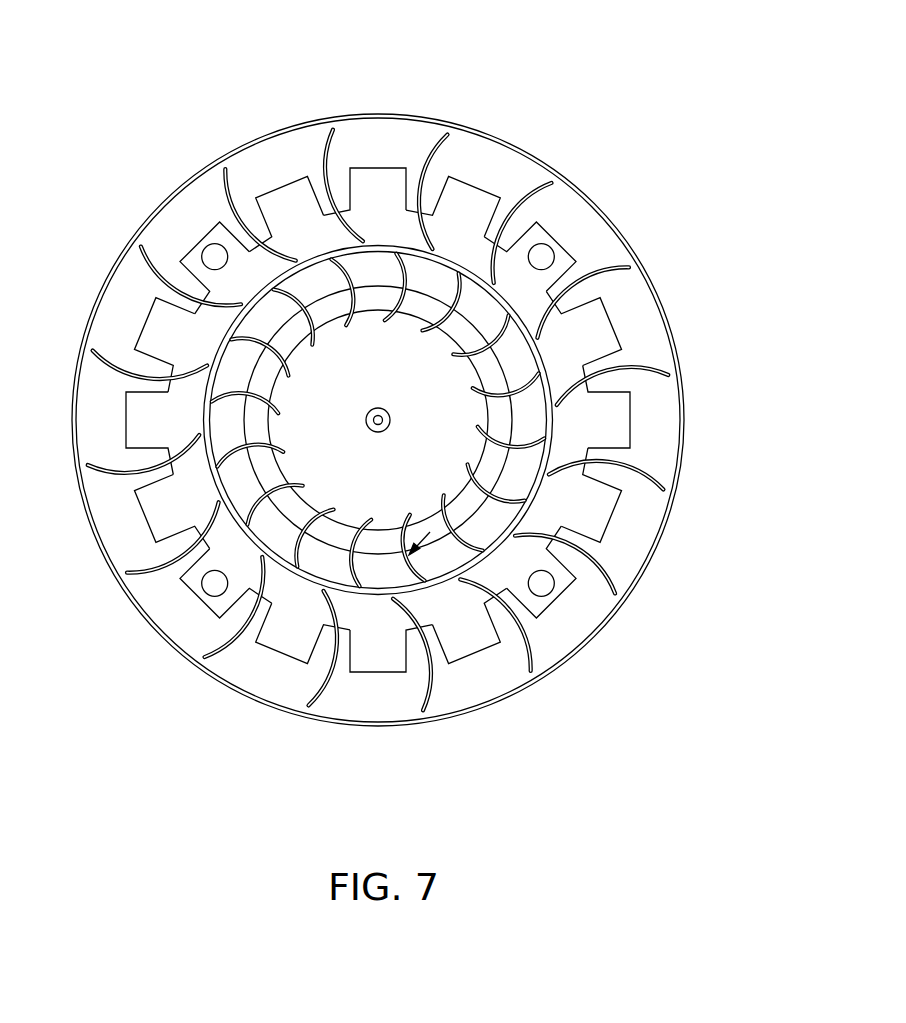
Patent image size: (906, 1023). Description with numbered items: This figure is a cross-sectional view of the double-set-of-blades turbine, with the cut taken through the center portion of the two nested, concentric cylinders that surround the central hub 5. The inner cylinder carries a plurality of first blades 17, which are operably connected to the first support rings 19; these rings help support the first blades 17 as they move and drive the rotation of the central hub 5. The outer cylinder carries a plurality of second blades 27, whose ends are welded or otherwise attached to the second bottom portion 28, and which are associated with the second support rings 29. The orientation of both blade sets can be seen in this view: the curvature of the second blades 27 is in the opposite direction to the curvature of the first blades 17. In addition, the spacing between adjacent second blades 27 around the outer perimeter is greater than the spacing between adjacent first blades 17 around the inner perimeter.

The central hub 5 is at (555, 413).
The first blades 17 is at (187, 578).
The first support rings 19 is at (425, 300).
The second blades 27 is at (230, 155).
The second bottom portion 28 is at (125, 280).
The second support rings 29 is at (375, 193).